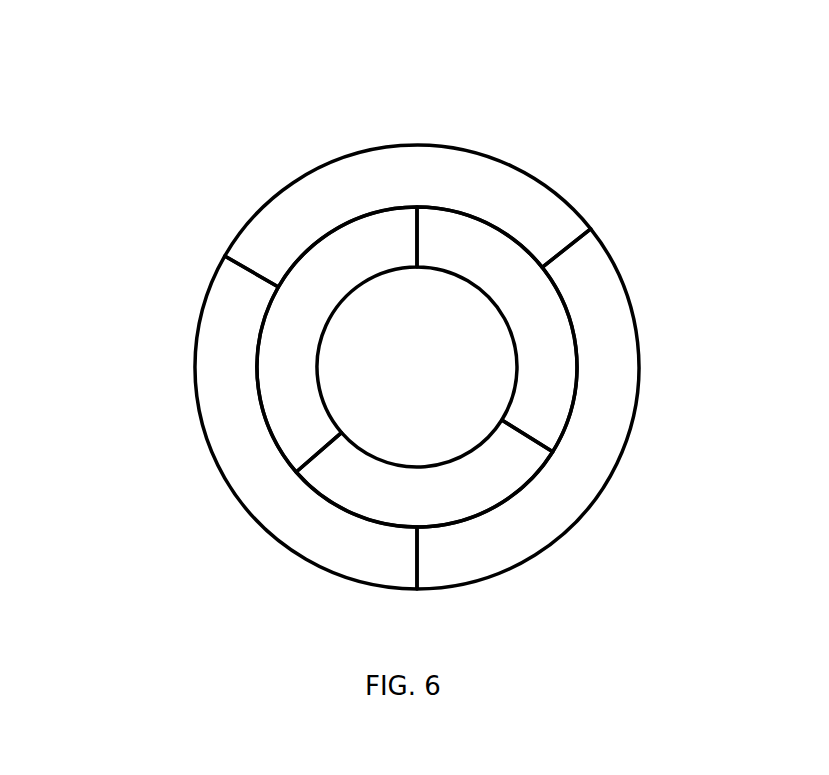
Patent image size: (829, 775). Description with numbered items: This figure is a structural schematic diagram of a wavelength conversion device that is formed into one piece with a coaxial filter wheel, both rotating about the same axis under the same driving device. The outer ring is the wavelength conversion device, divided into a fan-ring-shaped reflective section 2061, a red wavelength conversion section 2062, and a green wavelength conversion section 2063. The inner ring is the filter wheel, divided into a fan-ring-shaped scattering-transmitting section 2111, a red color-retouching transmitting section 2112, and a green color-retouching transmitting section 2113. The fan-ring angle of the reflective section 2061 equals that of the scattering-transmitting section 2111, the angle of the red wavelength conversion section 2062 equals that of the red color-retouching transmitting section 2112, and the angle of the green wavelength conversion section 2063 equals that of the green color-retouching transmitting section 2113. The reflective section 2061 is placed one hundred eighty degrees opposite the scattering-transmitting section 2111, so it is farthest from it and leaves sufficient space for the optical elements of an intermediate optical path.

The reflective section 2061 is at (400, 185).
The red wavelength conversion section 2062 is at (582, 442).
The green wavelength conversion section 2063 is at (253, 477).
The scattering-transmitting section 2111 is at (450, 492).
The red color-retouching transmitting section 2112 is at (300, 350).
The green color-retouching transmitting section 2113 is at (542, 352).